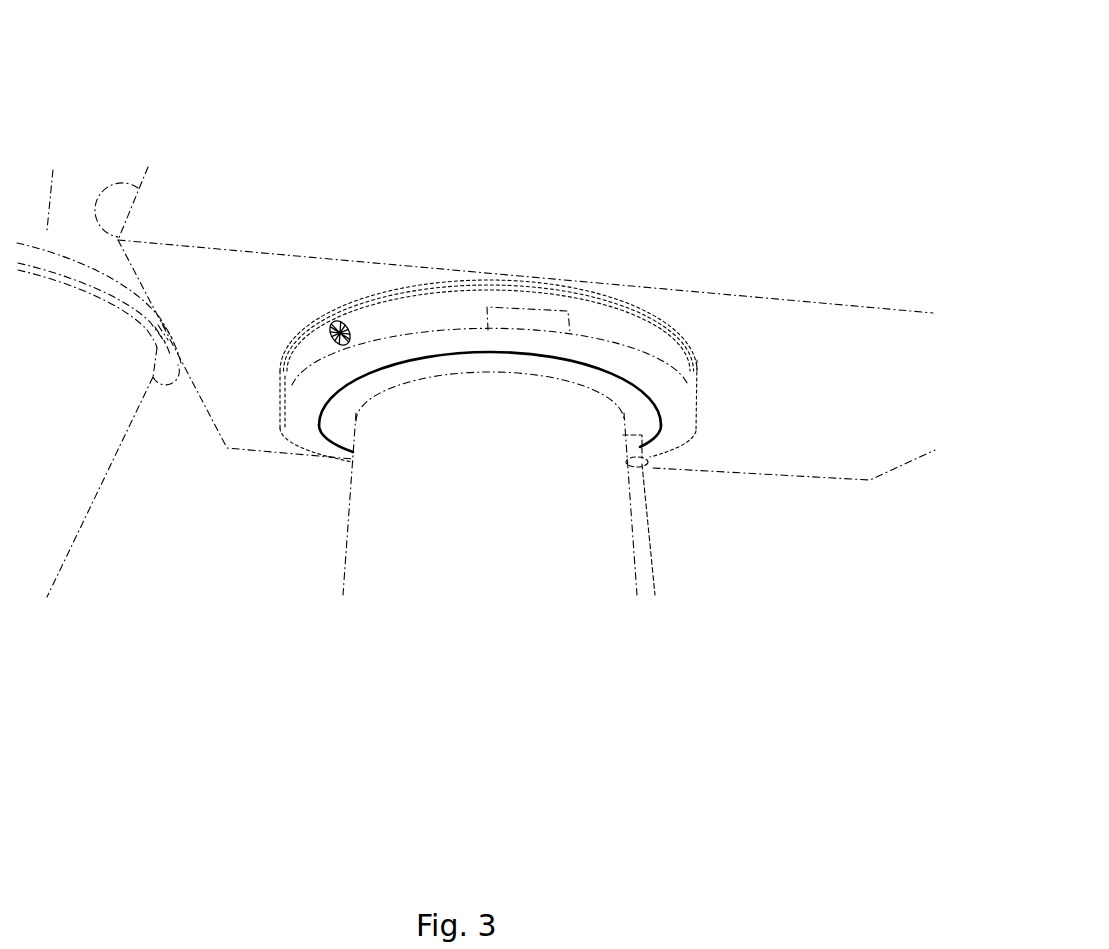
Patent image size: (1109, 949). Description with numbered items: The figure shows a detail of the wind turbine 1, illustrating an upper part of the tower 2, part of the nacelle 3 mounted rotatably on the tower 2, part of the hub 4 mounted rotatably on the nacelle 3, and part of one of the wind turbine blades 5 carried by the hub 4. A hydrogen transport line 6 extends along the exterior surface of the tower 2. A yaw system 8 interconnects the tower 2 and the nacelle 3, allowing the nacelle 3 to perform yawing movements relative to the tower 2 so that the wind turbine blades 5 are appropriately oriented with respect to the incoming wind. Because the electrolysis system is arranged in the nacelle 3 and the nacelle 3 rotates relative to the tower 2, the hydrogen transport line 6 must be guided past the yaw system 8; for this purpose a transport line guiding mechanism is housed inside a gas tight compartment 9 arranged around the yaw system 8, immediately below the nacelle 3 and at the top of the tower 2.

The wind turbine 1 is at (617, 85).
The tower 2 is at (408, 553).
The nacelle 3 is at (833, 432).
The hub 4 is at (75, 183).
The wind turbine blade 5 is at (38, 458).
The hydrogen transport line 6 is at (642, 543).
The yaw system 8 is at (344, 415).
The gas tight compartment 9 is at (427, 317).